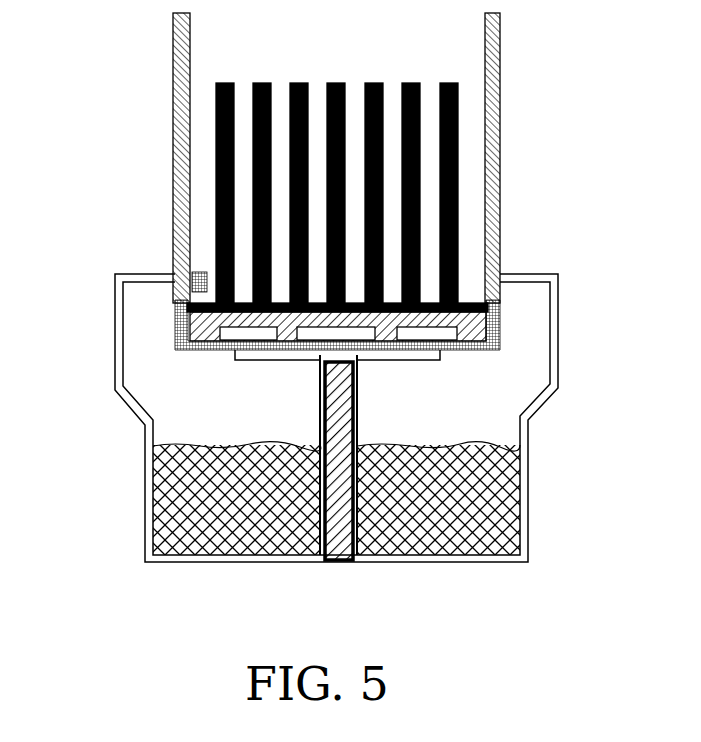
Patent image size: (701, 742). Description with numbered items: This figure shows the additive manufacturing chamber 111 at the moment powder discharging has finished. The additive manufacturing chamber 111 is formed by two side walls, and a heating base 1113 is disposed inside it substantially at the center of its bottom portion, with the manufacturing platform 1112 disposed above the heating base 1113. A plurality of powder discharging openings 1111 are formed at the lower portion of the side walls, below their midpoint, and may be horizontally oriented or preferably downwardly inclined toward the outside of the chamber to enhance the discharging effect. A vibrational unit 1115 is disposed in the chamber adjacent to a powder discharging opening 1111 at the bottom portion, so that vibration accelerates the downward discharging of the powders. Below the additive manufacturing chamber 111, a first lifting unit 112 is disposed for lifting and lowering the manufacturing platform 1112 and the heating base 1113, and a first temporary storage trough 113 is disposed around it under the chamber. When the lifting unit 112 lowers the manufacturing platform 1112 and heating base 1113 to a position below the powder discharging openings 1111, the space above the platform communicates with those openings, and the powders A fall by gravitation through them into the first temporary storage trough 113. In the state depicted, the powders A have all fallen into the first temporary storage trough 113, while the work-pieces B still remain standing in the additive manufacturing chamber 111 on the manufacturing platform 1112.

The additive manufacturing chamber 111 is at (187, 162).
The work-pieces B is at (216, 98).
The manufacturing platform 1112 is at (462, 305).
The heating base 1113 is at (205, 320).
The powder discharging openings 1111 is at (178, 301).
The vibrational unit 1115 is at (192, 278).
The first temporary storage trough 113 is at (115, 396).
The powders A is at (183, 490).
The first lifting unit 112 is at (345, 558).